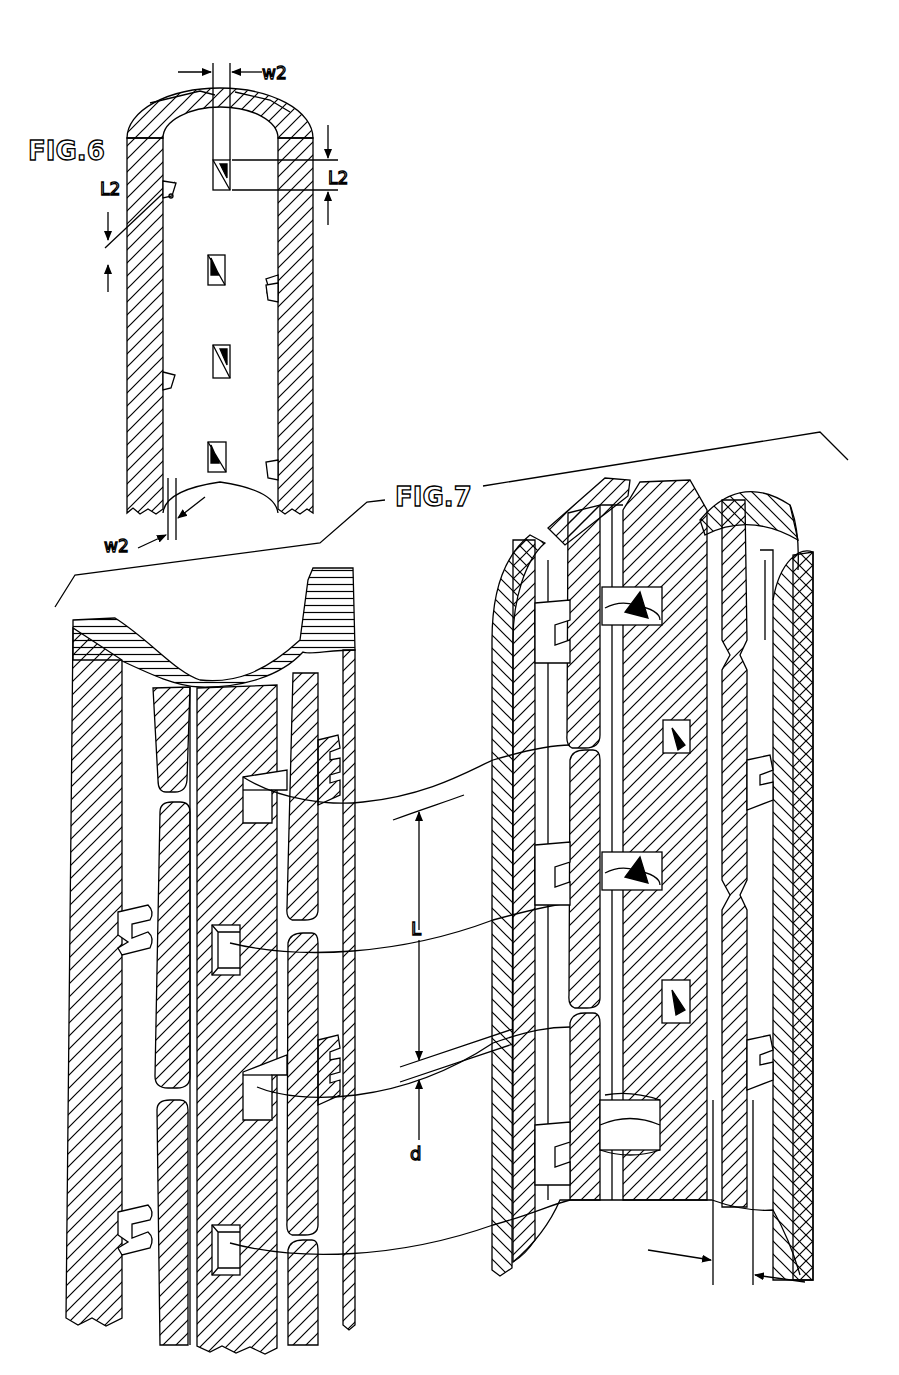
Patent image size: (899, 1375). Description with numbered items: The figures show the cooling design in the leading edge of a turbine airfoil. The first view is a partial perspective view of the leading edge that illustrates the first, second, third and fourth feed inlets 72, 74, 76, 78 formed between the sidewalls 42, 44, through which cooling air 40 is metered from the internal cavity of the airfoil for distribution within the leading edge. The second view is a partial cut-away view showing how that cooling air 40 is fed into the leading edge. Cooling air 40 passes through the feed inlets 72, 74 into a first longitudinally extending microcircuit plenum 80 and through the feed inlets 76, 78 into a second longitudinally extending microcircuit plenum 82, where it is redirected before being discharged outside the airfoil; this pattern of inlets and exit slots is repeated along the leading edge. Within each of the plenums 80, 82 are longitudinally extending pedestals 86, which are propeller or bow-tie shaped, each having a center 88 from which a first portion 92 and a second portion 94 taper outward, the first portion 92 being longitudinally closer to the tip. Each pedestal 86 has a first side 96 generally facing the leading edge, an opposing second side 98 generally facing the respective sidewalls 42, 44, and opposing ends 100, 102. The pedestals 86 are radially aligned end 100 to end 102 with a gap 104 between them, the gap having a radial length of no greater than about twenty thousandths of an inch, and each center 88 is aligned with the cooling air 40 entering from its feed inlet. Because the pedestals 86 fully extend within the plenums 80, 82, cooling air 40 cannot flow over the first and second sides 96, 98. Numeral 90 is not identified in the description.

In FIG. 6, the cooling air 40 is at (232, 222).
In FIG. 6, the sidewall 42 is at (127, 372).
In FIG. 6, the sidewall 44 is at (313, 372).
In FIG. 6, the first feed inlet 72 is at (207, 278).
In FIG. 7, the first feed inlet 72 is at (663, 742).
In FIG. 6, the second feed inlet 74 is at (266, 285).
In FIG. 7, the second feed inlet 74 is at (770, 790).
In FIG. 6, the third feed inlet 76 is at (231, 172).
In FIG. 7, the third feed inlet 76 is at (640, 620).
In FIG. 6, the fourth feed inlet 78 is at (172, 378).
In FIG. 7, the fourth feed inlet 78 is at (562, 640).
In FIG. 7, the first longitudinally extending microcircuit plenum 80 is at (660, 873).
In FIG. 7, the second longitudinally extending microcircuit plenum 82 is at (548, 545).
In FIG. 7, the pedestal 86 is at (150, 907).
In FIG. 7, the center 88 is at (745, 790).
In FIG. 7, the housing 90 is at (453, 952).
In FIG. 7, the first portion 92 is at (170, 820).
In FIG. 7, the second portion 94 is at (170, 1082).
In FIG. 7, the first side 96 is at (730, 530).
In FIG. 7, the second side 98 is at (785, 540).
In FIG. 7, the end 100 is at (773, 1200).
In FIG. 7, the end 102 is at (748, 895).
In FIG. 7, the gap 104 is at (748, 655).